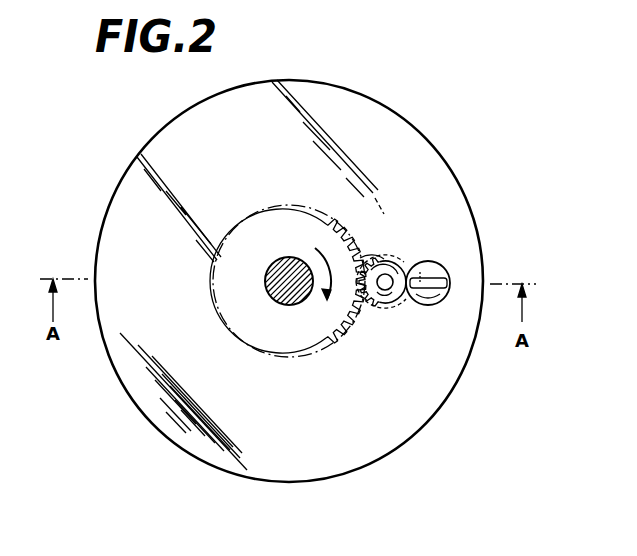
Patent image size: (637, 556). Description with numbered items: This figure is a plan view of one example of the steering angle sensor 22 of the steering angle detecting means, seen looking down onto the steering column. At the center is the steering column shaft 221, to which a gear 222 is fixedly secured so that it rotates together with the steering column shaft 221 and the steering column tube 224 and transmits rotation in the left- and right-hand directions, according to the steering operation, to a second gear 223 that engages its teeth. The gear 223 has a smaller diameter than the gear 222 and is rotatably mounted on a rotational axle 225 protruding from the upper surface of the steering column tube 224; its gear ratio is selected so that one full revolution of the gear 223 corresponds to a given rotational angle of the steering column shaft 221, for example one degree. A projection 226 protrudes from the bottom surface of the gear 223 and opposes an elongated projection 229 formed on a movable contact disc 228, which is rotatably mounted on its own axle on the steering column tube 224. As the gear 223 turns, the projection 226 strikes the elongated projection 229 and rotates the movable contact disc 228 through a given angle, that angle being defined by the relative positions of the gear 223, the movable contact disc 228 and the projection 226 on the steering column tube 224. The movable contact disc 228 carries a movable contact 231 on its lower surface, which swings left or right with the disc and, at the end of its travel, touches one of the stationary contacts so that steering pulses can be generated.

The steering angle sensor 22 is at (435, 132).
The steering column shaft 221 is at (288, 258).
The gear 222 is at (318, 326).
The gear 223 is at (382, 240).
The steering column tube 224 is at (348, 117).
The rotational axle 225 is at (391, 288).
The projection 226 is at (371, 305).
The movable contact disc 228 is at (446, 267).
The elongated projection 229 is at (441, 300).
The movable contact 231 is at (426, 264).